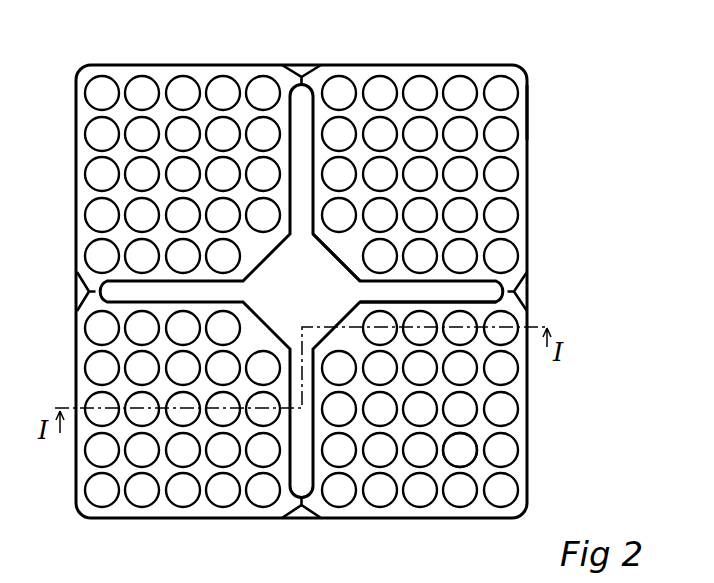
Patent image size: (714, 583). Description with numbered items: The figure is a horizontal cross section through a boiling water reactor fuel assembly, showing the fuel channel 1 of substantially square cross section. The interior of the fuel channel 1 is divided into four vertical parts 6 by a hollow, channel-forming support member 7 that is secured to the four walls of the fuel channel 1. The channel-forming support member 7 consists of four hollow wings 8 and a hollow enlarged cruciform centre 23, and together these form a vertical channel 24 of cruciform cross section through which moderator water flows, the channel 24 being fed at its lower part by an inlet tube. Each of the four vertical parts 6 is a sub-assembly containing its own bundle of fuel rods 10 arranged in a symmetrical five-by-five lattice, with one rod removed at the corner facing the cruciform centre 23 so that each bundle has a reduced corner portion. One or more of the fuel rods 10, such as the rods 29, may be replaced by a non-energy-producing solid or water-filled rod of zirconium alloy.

The fuel channel 1 is at (410, 523).
The vertical parts 6 is at (162, 112).
The channel-forming support member 7 is at (271, 254).
The hollow wings 8 is at (300, 64).
The fuel rods 10 is at (472, 113).
The hollow enlarged cruciform centre 23 is at (312, 266).
The vertical channel 24 is at (512, 300).
The rods 29 is at (462, 445).